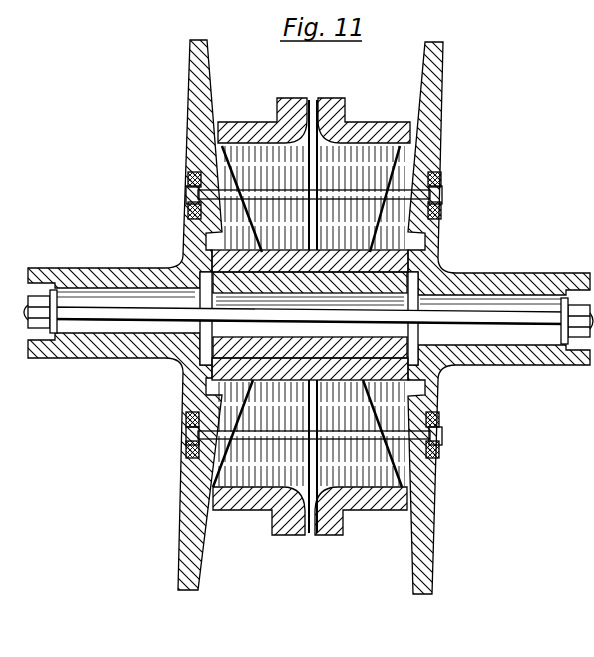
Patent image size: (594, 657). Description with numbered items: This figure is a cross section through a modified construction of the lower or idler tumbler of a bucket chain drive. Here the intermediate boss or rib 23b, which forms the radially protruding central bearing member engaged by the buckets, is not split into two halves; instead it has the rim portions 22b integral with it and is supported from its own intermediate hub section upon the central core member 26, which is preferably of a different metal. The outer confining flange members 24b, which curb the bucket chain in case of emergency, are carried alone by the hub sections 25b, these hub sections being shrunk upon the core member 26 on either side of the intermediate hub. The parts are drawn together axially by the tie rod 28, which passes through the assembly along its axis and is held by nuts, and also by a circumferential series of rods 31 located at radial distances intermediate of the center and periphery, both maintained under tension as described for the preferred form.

The flange members 24b is at (191, 70).
The hub sections 25b is at (243, 262).
The core member 26 is at (410, 273).
The rim portions 22b is at (383, 124).
The intermediate boss or rib 23b is at (337, 88).
The rods 31 is at (361, 191).
The tie rod 28 is at (510, 323).